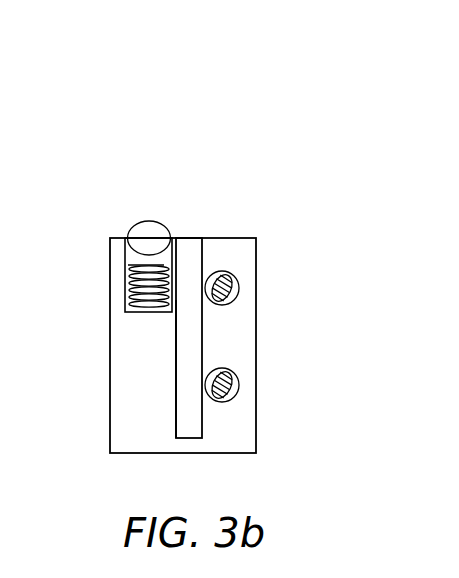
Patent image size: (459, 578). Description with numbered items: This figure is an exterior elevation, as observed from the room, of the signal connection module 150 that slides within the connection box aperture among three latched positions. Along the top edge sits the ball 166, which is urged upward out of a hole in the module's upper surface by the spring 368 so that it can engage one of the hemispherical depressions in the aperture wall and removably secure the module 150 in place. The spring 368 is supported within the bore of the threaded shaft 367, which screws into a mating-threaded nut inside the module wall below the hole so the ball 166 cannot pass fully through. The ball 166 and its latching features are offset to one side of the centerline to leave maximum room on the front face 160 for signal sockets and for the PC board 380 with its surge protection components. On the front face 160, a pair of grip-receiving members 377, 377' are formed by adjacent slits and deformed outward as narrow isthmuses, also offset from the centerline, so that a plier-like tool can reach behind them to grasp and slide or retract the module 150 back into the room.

The signal connection module 150 is at (204, 190).
The front face 160 is at (165, 428).
The ball 166 is at (148, 221).
The threaded shaft 367 is at (172, 378).
The spring 368 is at (130, 237).
The grip-receiving member 377 is at (250, 414).
The grip-receiving member 377' is at (251, 248).
The PC board 380 is at (160, 333).